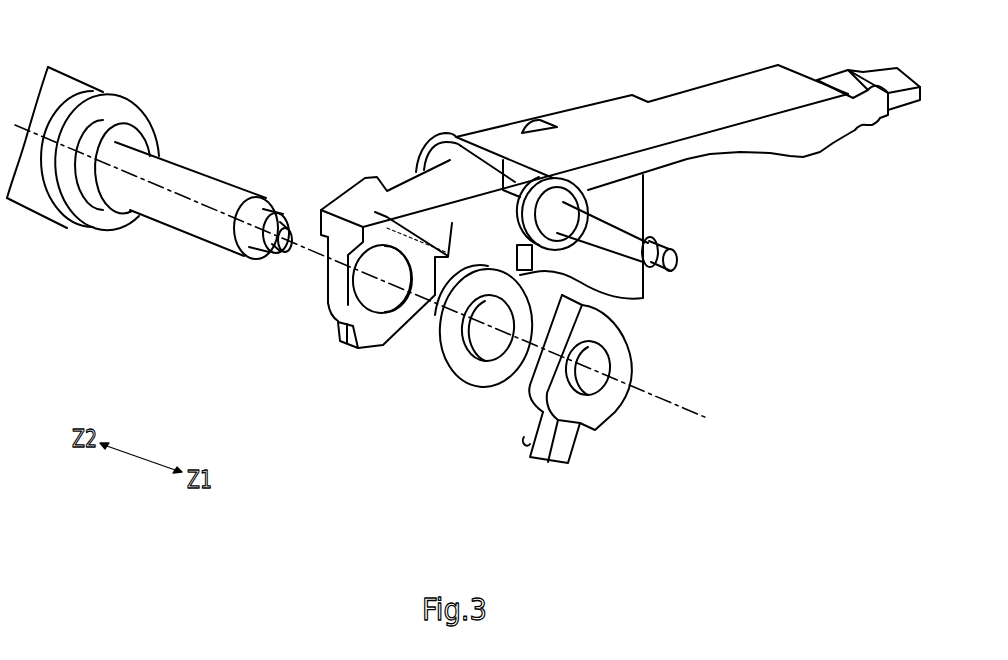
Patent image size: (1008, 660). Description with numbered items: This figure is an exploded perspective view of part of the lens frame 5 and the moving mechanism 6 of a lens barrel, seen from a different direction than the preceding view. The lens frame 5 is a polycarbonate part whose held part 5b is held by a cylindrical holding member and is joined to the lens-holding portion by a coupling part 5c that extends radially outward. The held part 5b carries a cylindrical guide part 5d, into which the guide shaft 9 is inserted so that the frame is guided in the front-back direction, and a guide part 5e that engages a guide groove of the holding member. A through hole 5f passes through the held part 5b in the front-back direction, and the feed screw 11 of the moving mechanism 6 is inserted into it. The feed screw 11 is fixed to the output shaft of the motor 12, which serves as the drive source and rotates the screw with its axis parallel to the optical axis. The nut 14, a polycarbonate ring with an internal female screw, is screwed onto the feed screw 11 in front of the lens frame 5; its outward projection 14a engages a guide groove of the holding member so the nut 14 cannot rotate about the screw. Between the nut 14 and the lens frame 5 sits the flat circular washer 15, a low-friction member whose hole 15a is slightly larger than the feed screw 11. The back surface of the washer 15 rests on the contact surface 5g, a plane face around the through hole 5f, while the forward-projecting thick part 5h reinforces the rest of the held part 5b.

The motor 12 is at (79, 80).
The feed screw 11 is at (208, 182).
The lens frame 5 is at (620, 217).
The held part 5b is at (712, 84).
The coupling part 5c is at (642, 289).
The cylindrical guide part 5d is at (450, 131).
The guide part 5e is at (870, 70).
The through hole 5f is at (387, 303).
The contact surface 5g is at (367, 341).
The thick part 5h is at (452, 233).
The guide shaft 9 is at (648, 232).
The nut 14 is at (605, 412).
The projection 14a is at (557, 468).
The washer 15 is at (480, 359).
The hole 15a is at (473, 347).
The moving mechanism 6 is at (631, 484).